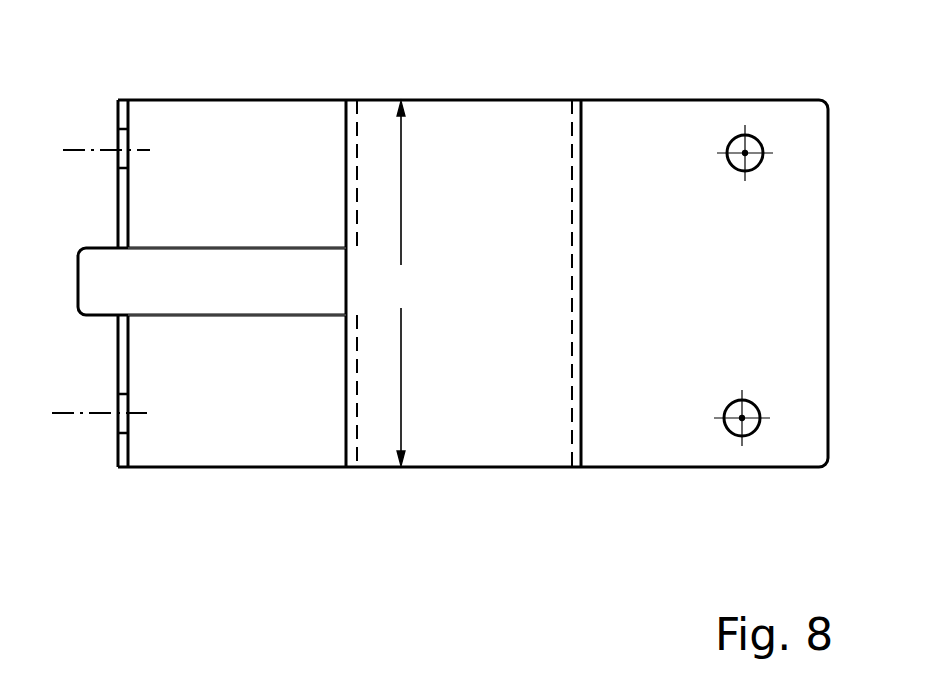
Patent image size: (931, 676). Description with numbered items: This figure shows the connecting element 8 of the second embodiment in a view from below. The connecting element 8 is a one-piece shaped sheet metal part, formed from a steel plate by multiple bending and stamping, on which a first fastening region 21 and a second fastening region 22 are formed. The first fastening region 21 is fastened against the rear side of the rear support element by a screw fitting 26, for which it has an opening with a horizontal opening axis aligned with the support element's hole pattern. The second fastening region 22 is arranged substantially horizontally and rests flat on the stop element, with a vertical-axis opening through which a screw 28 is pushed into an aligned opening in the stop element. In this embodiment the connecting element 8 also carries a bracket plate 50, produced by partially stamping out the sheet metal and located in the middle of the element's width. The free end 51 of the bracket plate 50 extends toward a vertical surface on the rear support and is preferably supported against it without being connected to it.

The connecting element 8 is at (522, 474).
The first fastening region 21 is at (120, 200).
The second fastening region 22 is at (665, 373).
The screw fitting 26 is at (80, 148).
The screw 28 is at (745, 153).
The bracket plate 50 is at (210, 318).
The free end 51 is at (85, 277).